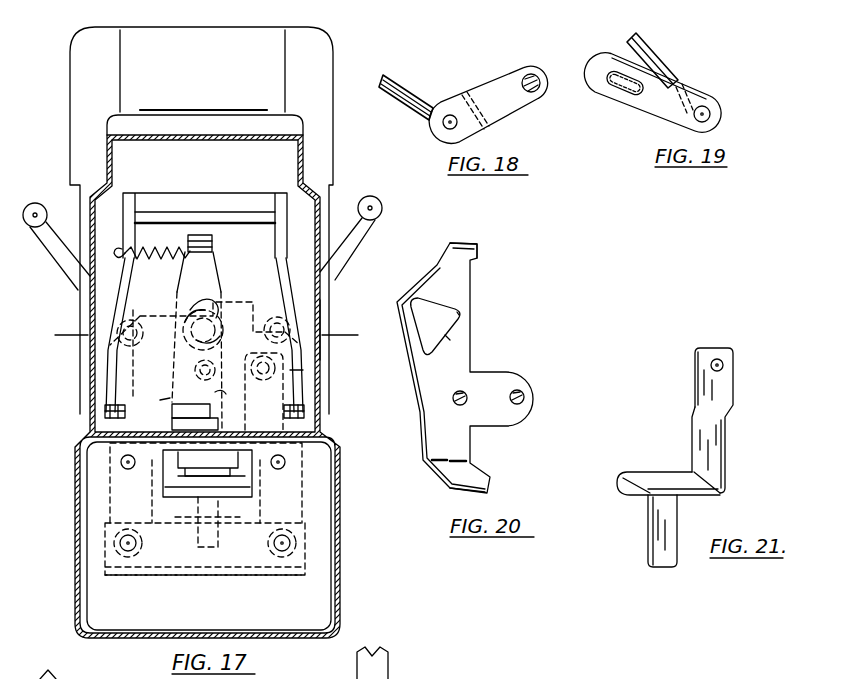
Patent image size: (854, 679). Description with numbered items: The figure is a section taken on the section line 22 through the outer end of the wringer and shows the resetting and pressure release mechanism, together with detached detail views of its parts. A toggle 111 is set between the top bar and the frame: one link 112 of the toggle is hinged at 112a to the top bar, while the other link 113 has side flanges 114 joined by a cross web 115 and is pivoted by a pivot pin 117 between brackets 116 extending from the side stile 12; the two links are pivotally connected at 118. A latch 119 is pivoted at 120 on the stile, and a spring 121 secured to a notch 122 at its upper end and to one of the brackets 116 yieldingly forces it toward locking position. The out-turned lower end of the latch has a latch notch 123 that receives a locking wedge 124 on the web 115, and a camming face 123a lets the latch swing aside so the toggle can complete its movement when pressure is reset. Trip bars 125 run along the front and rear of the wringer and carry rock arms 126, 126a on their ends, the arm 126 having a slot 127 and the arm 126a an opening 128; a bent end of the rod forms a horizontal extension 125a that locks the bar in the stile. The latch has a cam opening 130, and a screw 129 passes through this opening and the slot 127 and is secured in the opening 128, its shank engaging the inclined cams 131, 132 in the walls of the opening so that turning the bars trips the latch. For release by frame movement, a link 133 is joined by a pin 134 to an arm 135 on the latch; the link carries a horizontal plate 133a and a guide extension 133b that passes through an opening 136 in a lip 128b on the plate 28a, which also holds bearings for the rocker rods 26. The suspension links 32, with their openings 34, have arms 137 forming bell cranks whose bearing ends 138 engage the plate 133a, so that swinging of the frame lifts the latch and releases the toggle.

In FIG. 17, the stile 12 is at (331, 192).
In FIG. 17, the section line 22 is at (205, 339).
In FIG. 17, the rocker rods 26 is at (107, 556).
In FIG. 17, the plate 28a is at (215, 571).
In FIG. 17, the links 32 is at (98, 495).
In FIG. 17, the openings 34 is at (70, 453).
In FIG. 17, the toggle 111 is at (283, 166).
In FIG. 17, the toggle link 112 is at (328, 302).
In FIG. 17, the hinge 112a is at (228, 109).
In FIG. 17, the toggle link 113 is at (291, 366).
In FIG. 17, the side flanges 114 is at (300, 378).
In FIG. 17, the cross web 115 is at (233, 267).
In FIG. 17, the brackets 116 is at (131, 195).
In FIG. 17, the pivot pin 117 is at (181, 218).
In FIG. 17, the pivotal connection 118 is at (105, 414).
In FIG. 17, the latch 119 is at (155, 398).
In FIG. 20, the latch 119 is at (463, 442).
In FIG. 17, the pivot 120 is at (186, 378).
In FIG. 20, the pivot 120 is at (457, 402).
In FIG. 17, the spring 121 is at (152, 251).
In FIG. 17, the notch 122 is at (213, 244).
In FIG. 20, the notch 122 is at (473, 255).
In FIG. 20, the latch notch 123 is at (480, 477).
In FIG. 20, the camming face 123a is at (463, 487).
In FIG. 17, the locking wedge 124 is at (212, 418).
In FIG. 17, the trip bars 125 is at (68, 268).
In FIG. 18, the lever tab 125a is at (395, 98).
In FIG. 19, the lever tab 125a is at (644, 44).
In FIG. 17, the rock arm 126 is at (259, 311).
In FIG. 19, the rock arm 126 is at (667, 83).
In FIG. 17, the rock arm 126a is at (138, 355).
In FIG. 18, the rock arm 126a is at (490, 76).
In FIG. 19, the slot 127 is at (618, 96).
In FIG. 18, the opening 128 is at (533, 97).
In FIG. 17, the lip 128b is at (185, 524).
In FIG. 17, the screw 129 is at (222, 292).
In FIG. 17, the cam opening 130 is at (205, 332).
In FIG. 20, the cam opening 130 is at (452, 313).
In FIG. 20, the inclined cam 131 is at (435, 307).
In FIG. 20, the inclined cam 132 is at (450, 337).
In FIG. 21, the link 133 is at (713, 449).
In FIG. 17, the plate 133a is at (200, 477).
In FIG. 21, the plate 133a is at (715, 492).
In FIG. 21, the guide extension 133b is at (655, 538).
In FIG. 17, the pin 134 is at (253, 369).
In FIG. 21, the pin 134 is at (724, 365).
In FIG. 20, the arm 135 is at (492, 384).
In FIG. 17, the opening 136 is at (222, 522).
In FIG. 17, the arms 137 is at (175, 452).
In FIG. 17, the bearing ends 138 is at (186, 468).